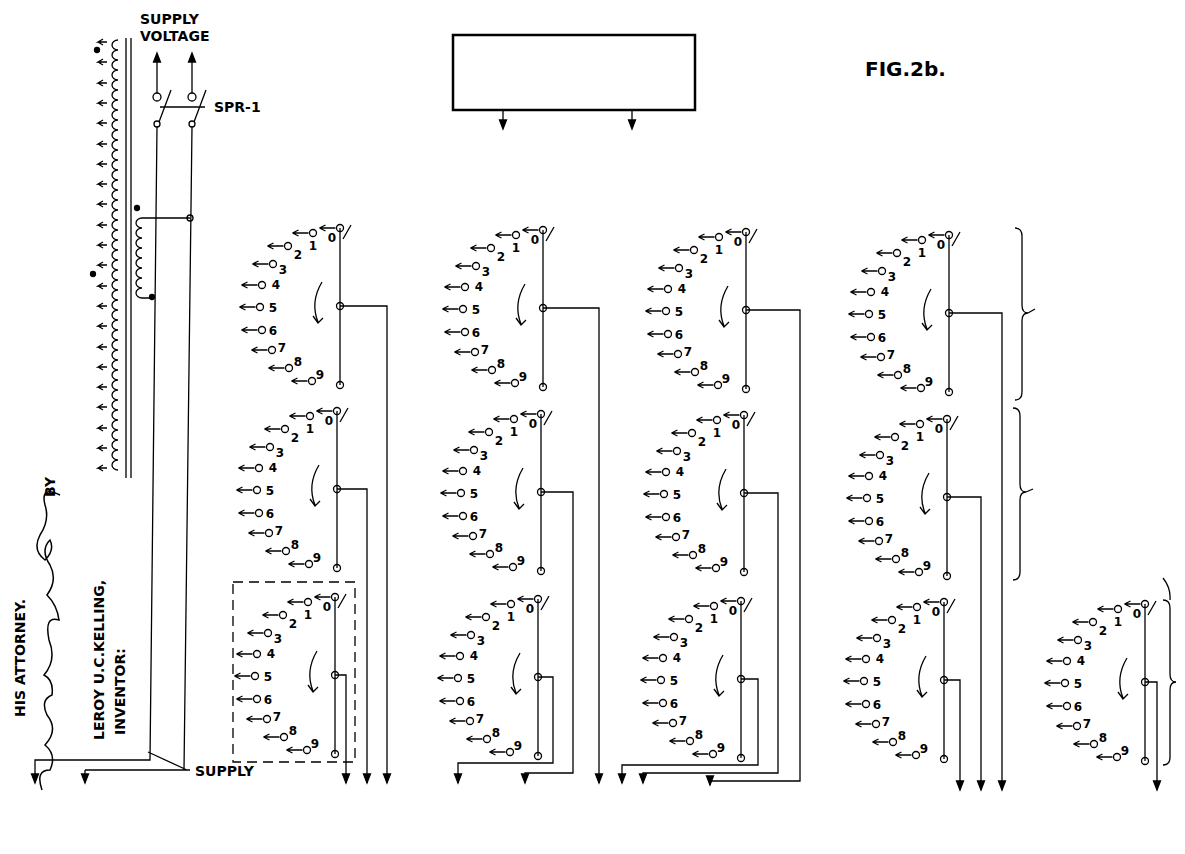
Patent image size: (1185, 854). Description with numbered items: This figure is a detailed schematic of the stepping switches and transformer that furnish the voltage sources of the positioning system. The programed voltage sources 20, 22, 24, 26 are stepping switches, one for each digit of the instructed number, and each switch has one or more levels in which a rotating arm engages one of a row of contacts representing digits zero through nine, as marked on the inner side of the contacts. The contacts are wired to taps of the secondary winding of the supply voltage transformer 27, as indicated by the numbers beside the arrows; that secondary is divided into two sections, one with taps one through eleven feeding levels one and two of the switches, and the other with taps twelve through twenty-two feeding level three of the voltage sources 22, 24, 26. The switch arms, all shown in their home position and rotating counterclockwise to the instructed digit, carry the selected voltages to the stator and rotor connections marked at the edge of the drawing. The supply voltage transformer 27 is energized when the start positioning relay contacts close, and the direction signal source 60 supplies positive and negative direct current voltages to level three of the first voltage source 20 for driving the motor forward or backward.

The programed voltage source 20 is at (329, 167).
The programed voltage source 22 is at (538, 174).
The programed voltage source 24 is at (738, 174).
The programed voltage source 26 is at (937, 174).
The supply voltage transformer 27 is at (118, 472).
The direction signal source 60 is at (226, 707).